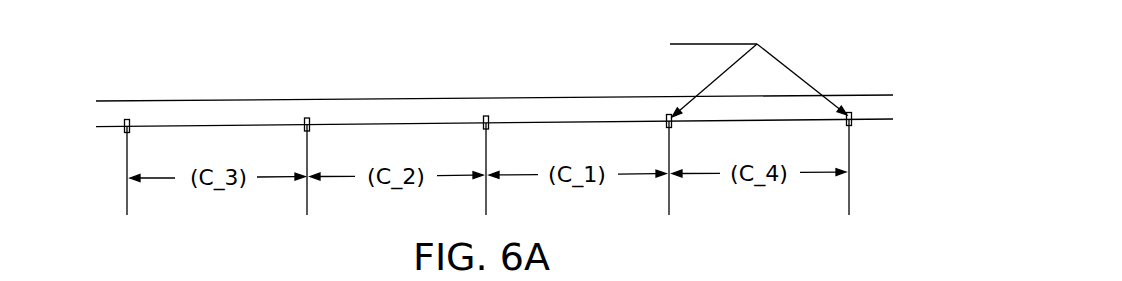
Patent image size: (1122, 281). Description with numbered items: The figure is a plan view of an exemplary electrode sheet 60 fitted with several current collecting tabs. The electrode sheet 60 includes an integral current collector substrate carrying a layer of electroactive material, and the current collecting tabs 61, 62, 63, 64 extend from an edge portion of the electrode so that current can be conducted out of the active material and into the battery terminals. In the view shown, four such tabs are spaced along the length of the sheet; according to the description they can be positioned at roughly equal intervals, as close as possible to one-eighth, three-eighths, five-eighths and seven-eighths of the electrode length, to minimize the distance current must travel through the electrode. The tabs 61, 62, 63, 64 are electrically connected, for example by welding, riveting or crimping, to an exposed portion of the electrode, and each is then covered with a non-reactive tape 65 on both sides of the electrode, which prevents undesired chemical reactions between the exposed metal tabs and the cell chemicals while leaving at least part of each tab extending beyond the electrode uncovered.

The electrode sheet 60 is at (244, 98).
The current collecting tab 61 is at (659, 131).
The current collecting tab 62 is at (475, 132).
The current collecting tab 63 is at (296, 134).
The current collecting tab 64 is at (140, 134).
The non-reactive tape 65 is at (581, 64).